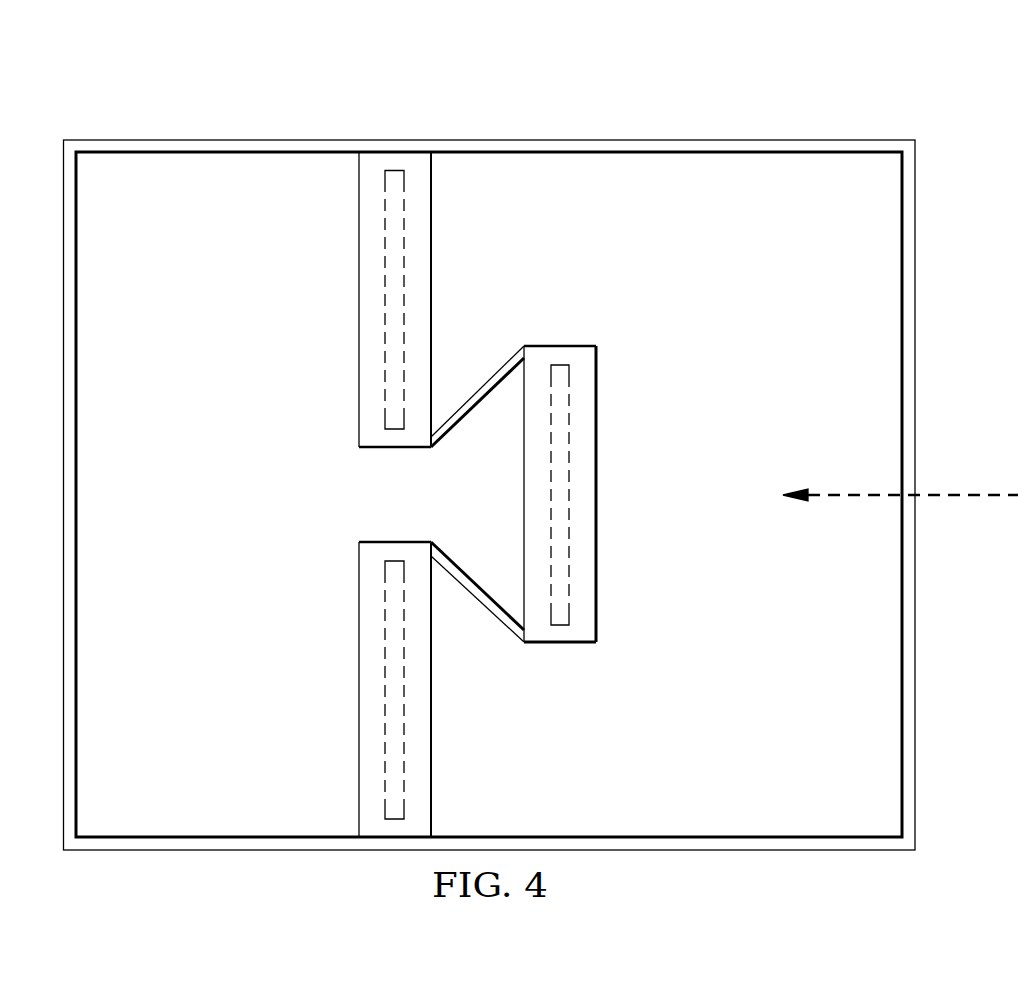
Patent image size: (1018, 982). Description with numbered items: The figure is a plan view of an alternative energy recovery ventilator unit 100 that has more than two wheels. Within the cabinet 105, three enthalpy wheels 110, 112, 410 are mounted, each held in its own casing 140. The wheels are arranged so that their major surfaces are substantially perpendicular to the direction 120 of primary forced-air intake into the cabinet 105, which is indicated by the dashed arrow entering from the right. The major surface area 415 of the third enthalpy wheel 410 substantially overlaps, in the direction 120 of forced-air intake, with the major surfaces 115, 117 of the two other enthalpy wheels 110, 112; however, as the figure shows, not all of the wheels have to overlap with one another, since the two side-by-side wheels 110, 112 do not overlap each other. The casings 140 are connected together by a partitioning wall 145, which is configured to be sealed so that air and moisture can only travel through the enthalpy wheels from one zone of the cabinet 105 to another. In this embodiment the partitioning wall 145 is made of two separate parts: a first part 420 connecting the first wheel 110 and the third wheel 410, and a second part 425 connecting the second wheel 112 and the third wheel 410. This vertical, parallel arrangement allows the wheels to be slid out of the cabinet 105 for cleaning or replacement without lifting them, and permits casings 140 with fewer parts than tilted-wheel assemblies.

The energy recovery ventilator unit 100 is at (688, 86).
The cabinet 105 is at (840, 131).
The enthalpy wheel 110 is at (391, 444).
The enthalpy wheel 112 is at (373, 709).
The major surface 115 is at (385, 226).
The major surface 117 is at (385, 618).
The direction of primary forced-air intake 120 is at (952, 494).
The casing 140 is at (370, 420).
The partitioning wall 145 is at (489, 293).
The enthalpy wheel 410 is at (563, 352).
The major surface area 415 is at (569, 425).
The first part 420 is at (480, 407).
The second part 425 is at (476, 600).